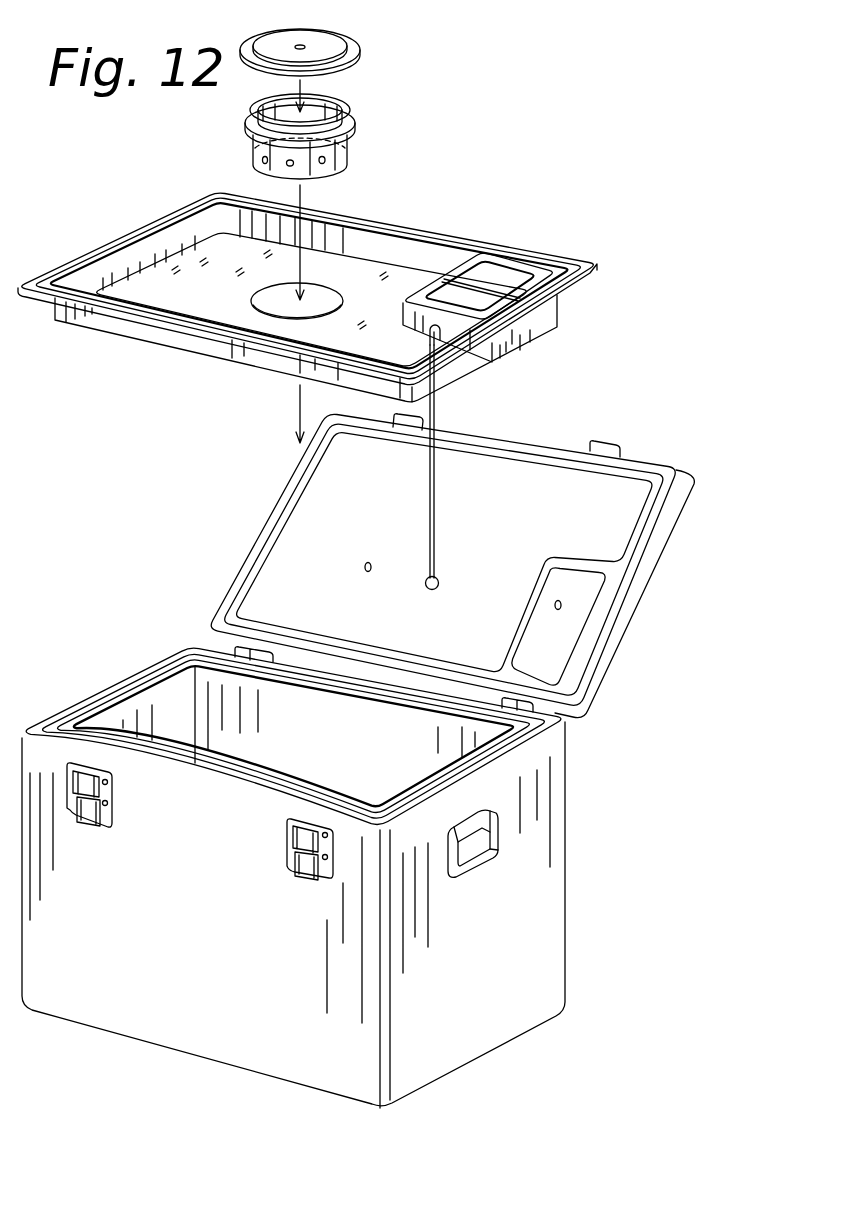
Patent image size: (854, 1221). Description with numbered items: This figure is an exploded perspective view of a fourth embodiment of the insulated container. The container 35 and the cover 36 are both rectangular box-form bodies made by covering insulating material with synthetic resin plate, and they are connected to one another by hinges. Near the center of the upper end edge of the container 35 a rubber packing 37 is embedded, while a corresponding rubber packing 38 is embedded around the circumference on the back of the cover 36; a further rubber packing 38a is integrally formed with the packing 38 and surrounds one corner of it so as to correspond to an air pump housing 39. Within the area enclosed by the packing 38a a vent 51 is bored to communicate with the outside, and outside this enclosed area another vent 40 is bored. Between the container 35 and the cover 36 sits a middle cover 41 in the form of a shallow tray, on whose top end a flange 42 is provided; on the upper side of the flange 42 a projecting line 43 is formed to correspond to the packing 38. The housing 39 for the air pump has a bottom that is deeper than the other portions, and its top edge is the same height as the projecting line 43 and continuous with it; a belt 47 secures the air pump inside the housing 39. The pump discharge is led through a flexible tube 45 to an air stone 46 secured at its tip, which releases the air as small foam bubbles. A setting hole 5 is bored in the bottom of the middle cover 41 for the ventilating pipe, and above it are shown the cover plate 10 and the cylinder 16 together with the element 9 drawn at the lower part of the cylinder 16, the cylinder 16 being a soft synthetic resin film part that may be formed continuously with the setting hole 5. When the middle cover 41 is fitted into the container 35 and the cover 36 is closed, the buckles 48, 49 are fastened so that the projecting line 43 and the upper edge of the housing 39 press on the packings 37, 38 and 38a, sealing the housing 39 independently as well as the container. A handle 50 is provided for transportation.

The setting hole 5 is at (320, 300).
The ring body 9 is at (324, 161).
The cover plate 10 is at (330, 47).
The cylinder 16 is at (336, 144).
The container 35 is at (540, 933).
The cover 36 is at (632, 594).
The rubber packing 37 is at (80, 705).
The rubber packing 38 is at (536, 462).
The rubber packing 38a is at (542, 580).
The air pump housing 39 is at (440, 288).
The vent 40 is at (363, 566).
The middle cover 41 is at (152, 333).
The flange 42 is at (28, 293).
The projecting line 43 is at (142, 232).
The flexible tube 45 is at (436, 406).
The air stone 46 is at (428, 583).
The belt 47 is at (498, 293).
The buckle 48 is at (303, 843).
The buckle 49 is at (596, 448).
The handle 50 is at (492, 843).
The vent 51 is at (562, 606).